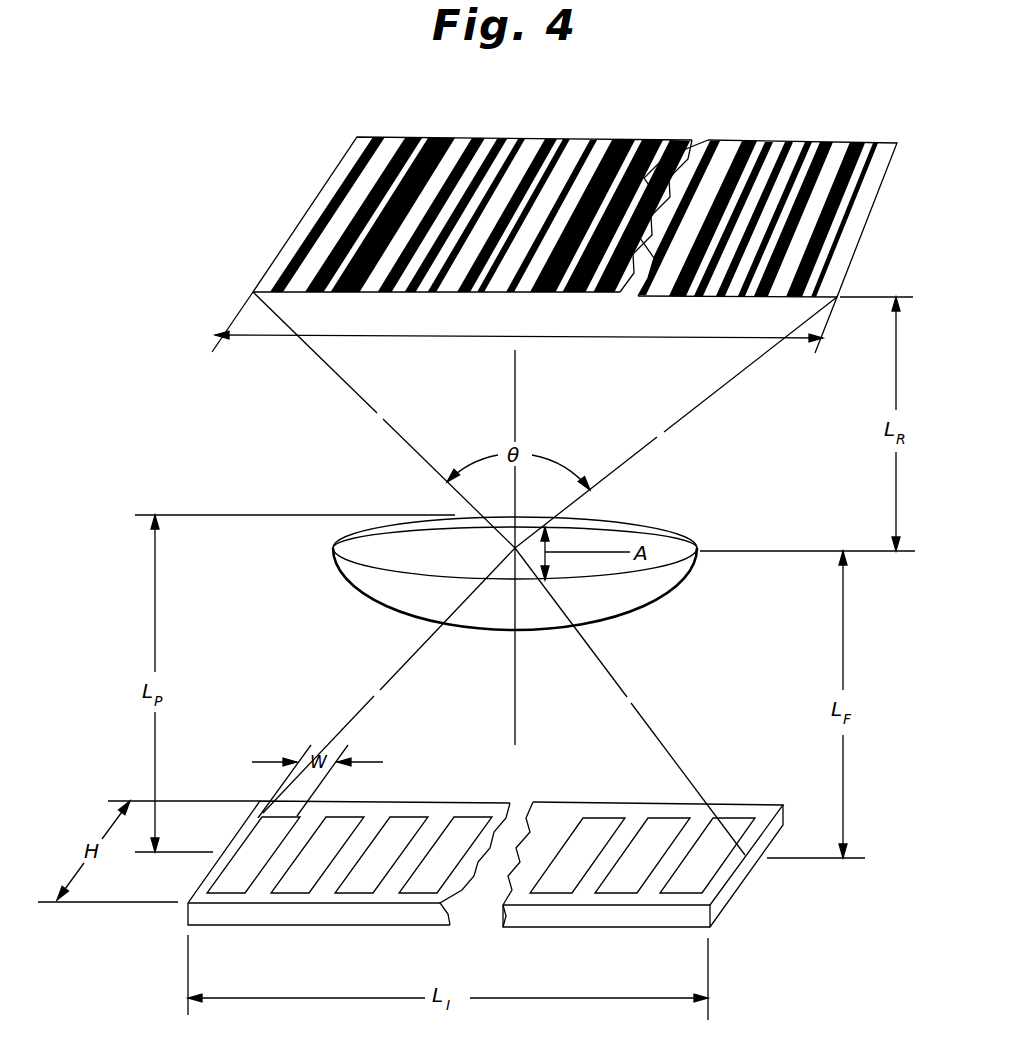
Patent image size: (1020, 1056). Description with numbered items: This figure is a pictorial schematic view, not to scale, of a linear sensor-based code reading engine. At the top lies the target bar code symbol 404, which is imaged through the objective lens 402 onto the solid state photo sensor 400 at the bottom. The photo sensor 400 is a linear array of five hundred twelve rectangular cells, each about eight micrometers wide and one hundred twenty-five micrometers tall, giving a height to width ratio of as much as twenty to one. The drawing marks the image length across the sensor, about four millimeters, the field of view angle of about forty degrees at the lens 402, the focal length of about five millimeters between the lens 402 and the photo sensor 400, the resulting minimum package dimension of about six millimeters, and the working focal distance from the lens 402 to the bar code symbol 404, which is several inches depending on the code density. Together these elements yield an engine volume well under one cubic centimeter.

The solid state photo sensor 400 is at (738, 894).
The objective lens 402 is at (650, 527).
The target bar code symbol 404 is at (805, 143).